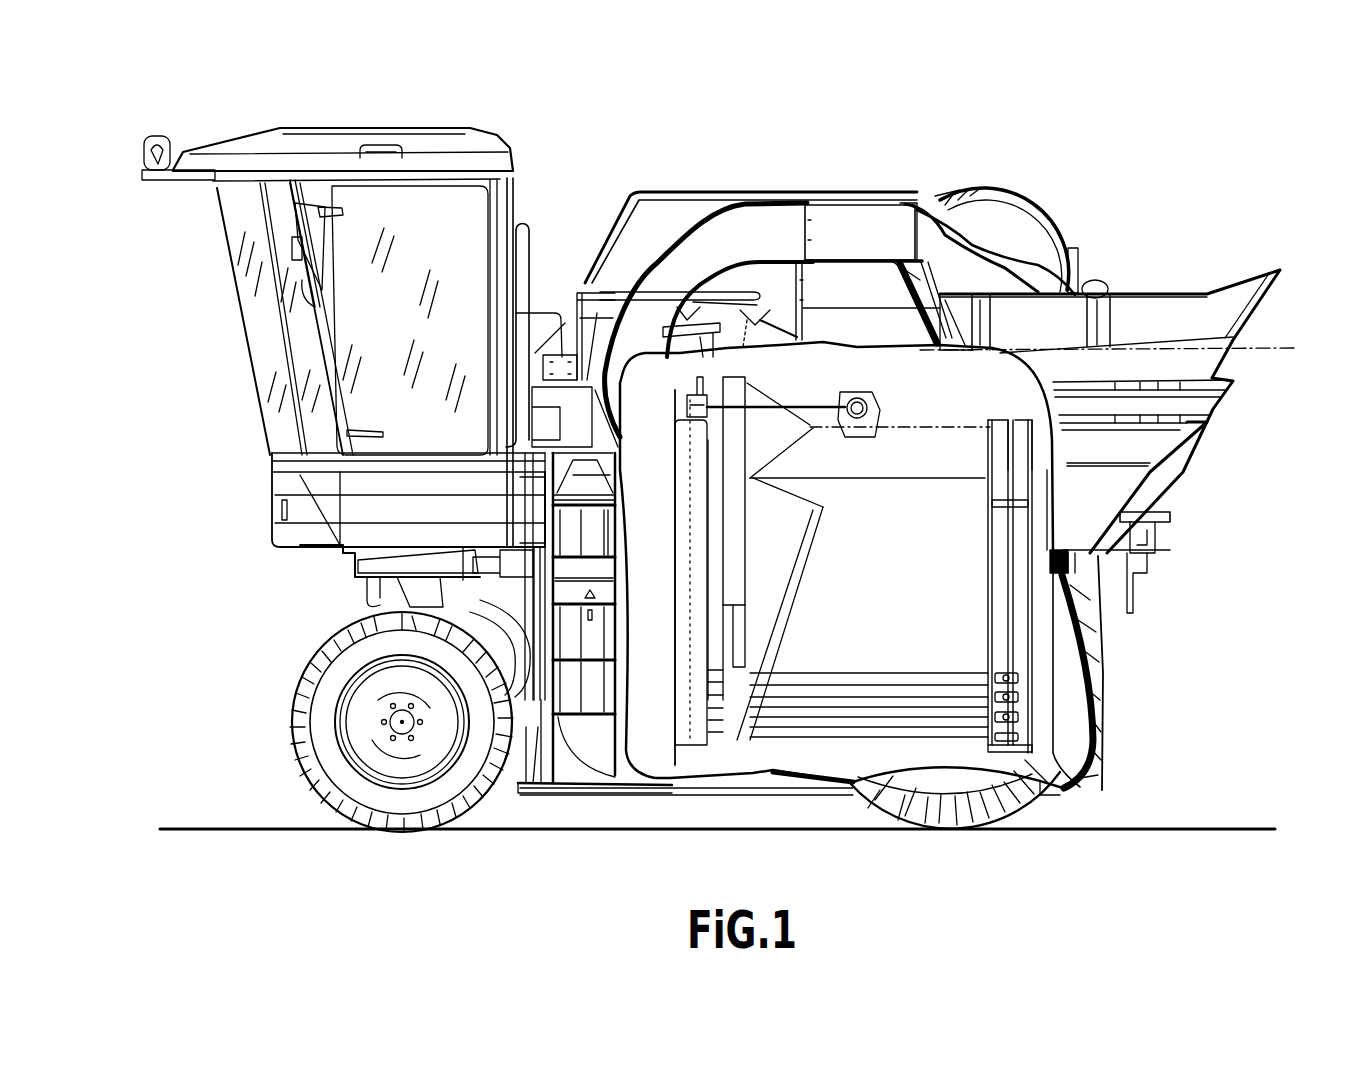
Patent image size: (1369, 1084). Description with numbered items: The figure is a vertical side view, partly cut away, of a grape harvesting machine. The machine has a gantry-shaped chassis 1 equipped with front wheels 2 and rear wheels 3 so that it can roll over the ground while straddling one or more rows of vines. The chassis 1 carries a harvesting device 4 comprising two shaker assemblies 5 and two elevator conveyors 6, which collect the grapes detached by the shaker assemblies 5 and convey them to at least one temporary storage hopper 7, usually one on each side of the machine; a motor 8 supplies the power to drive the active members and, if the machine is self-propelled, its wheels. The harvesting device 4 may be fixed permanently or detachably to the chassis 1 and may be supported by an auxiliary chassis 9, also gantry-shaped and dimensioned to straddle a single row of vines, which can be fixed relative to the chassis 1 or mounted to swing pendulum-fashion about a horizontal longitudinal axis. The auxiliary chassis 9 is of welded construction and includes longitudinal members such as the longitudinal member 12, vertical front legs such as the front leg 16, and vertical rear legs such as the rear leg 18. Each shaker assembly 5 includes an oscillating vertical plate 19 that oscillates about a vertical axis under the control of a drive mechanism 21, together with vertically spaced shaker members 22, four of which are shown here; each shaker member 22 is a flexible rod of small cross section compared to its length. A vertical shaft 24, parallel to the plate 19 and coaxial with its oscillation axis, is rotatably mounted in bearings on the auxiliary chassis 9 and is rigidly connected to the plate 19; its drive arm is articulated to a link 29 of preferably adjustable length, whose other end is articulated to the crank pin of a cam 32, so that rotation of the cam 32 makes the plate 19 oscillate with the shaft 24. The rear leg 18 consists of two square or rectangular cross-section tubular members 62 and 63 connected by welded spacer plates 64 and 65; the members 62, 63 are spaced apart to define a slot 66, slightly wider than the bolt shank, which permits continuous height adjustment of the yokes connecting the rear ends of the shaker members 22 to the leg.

The chassis 1 is at (1172, 542).
The front wheels 2 is at (290, 700).
The rear wheels 3 is at (1042, 813).
The harvesting device 4 is at (903, 382).
The shaker assembly 5 is at (684, 766).
The elevator conveyor 6 is at (1058, 213).
The temporary storage hopper 7 is at (1207, 360).
The motor 8 is at (556, 305).
The auxiliary chassis 9 is at (932, 421).
The longitudinal member 12 is at (921, 474).
The vertical front leg 16 is at (731, 513).
The vertical rear leg 18 is at (1035, 632).
The oscillating vertical plate 19 is at (678, 566).
The drive mechanism 21 is at (820, 384).
The shaker members 22 is at (873, 736).
The vertical shaft 24 is at (692, 389).
The link 29 is at (811, 422).
The cam 32 is at (846, 398).
The tubular member 62 is at (998, 566).
The tubular member 63 is at (1019, 598).
The spacer plate 64 is at (996, 506).
The spacer plate 65 is at (1053, 756).
The slot 66 is at (1006, 636).